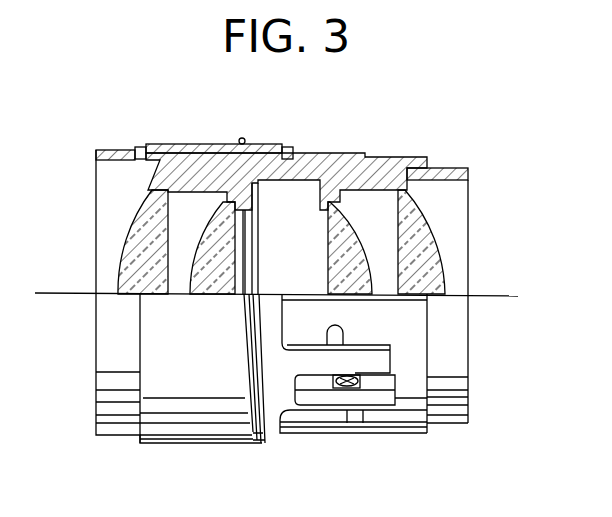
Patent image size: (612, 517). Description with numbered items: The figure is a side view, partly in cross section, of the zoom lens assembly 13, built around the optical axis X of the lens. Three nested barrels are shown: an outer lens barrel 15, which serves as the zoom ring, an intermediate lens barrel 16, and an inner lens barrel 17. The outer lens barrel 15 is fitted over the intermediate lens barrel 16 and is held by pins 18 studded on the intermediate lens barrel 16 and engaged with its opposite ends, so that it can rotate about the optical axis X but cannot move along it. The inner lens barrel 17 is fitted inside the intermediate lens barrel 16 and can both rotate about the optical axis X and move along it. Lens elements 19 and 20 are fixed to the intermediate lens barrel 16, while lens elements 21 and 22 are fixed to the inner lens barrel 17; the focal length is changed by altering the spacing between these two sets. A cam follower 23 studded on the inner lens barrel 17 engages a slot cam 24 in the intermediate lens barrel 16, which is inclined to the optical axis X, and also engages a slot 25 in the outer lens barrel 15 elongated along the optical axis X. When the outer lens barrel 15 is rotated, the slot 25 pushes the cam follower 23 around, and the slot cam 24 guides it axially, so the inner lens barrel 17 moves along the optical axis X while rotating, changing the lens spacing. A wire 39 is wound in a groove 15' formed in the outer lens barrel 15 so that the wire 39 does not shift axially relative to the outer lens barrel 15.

The zoom lens assembly 13 is at (394, 132).
The optical axis X is at (52, 297).
The outer lens barrel 15 is at (189, 298).
The groove 15' is at (265, 293).
The intermediate lens barrel 16 is at (172, 153).
The inner lens barrel 17 is at (462, 168).
The pins 18 is at (139, 147).
The lens element 19 is at (133, 234).
The lens element 20 is at (210, 247).
The lens element 21 is at (432, 236).
The lens element 22 is at (365, 250).
The cam follower 23 is at (343, 390).
The slot cam 24 is at (358, 428).
The slot 25 is at (385, 380).
The wire 39 is at (256, 412).